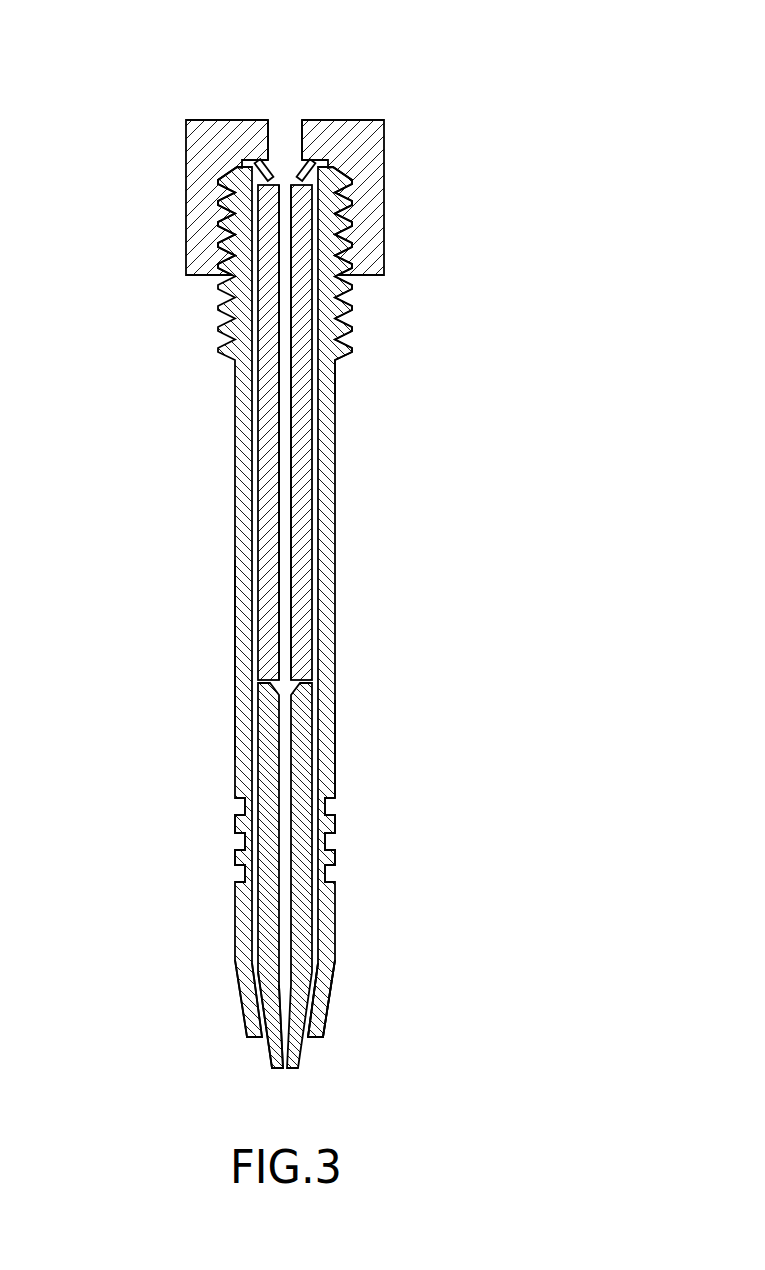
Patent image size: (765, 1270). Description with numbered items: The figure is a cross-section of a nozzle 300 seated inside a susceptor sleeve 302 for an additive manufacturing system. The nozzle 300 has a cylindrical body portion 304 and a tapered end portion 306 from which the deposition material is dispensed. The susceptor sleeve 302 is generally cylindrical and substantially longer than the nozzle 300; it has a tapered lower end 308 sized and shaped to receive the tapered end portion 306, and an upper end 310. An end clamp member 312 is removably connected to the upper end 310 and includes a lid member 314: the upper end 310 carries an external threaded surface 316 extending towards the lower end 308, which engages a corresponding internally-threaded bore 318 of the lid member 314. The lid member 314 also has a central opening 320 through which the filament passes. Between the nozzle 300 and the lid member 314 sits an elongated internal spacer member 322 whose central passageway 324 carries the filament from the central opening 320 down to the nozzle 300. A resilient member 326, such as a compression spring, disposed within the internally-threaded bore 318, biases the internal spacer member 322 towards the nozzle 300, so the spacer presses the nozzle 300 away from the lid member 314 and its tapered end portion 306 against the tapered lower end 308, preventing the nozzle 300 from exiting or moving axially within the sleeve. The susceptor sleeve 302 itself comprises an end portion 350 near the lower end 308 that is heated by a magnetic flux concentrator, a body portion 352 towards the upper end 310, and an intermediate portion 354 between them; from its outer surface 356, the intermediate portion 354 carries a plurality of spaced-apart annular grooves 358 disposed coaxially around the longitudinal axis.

The nozzle 300 is at (303, 885).
The susceptor sleeve 302 is at (235, 563).
The cylindrical body portion 304 is at (302, 750).
The tapered end portion 306 is at (272, 1017).
The lower end 308 is at (315, 1038).
The upper end 310 is at (333, 176).
The end clamp member 312 is at (184, 128).
The lid member 314 is at (186, 243).
The external threaded surface 316 is at (346, 350).
The internally-threaded bore 318 is at (348, 289).
The central opening 320 is at (278, 118).
The internal spacer member 322 is at (297, 605).
The central passageway 324 is at (287, 508).
The resilient member 326 is at (293, 150).
The end portion 350 is at (235, 960).
The body portion 352 is at (238, 667).
The intermediate portion 354 is at (227, 825).
The outer surface 356 is at (337, 778).
The annular grooves 358 is at (335, 807).